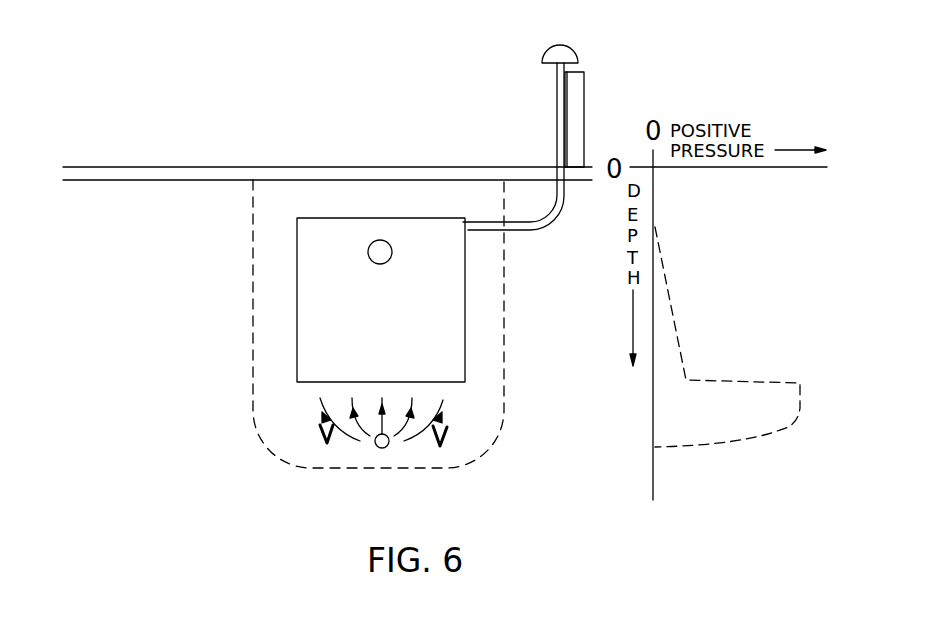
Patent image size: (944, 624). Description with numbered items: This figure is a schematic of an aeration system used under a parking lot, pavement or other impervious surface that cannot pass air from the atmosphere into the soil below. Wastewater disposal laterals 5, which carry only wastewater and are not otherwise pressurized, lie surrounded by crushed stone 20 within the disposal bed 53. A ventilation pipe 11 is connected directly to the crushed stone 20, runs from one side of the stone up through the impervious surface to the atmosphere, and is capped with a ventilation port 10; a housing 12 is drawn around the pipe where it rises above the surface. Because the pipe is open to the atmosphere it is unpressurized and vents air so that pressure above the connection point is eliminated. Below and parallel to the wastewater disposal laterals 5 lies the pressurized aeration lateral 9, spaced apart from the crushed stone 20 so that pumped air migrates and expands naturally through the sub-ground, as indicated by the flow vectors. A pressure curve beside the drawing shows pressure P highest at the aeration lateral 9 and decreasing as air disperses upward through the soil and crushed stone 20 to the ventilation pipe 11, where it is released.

The wastewater disposal laterals 5 is at (380, 264).
The aeration lateral 9 is at (382, 448).
The ventilation port 10 is at (542, 59).
The ventilation pipe 11 is at (472, 232).
The housing 12 is at (584, 115).
The crushed stone 20 is at (357, 382).
The disposal bed 53 is at (417, 350).
The pressure P is at (697, 446).